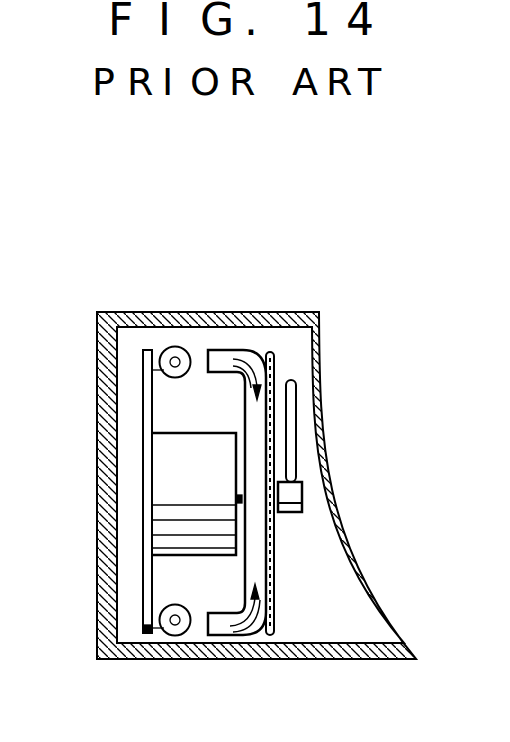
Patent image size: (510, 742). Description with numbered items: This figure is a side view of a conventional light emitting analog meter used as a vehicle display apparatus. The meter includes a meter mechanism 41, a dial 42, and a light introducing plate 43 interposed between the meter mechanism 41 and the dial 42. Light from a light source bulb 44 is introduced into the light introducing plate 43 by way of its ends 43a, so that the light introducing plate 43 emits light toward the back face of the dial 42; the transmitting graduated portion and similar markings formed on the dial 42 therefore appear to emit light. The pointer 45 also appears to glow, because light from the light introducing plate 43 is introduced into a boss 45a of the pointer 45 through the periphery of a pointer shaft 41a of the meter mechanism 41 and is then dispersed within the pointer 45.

The meter mechanism 41 is at (158, 492).
The pointer shaft 41a is at (238, 496).
The dial 42 is at (276, 585).
The light introducing plate 43 is at (258, 539).
The ends of light introducing plate 43a is at (228, 358).
The light source bulb 44 is at (172, 348).
The pointer 45 is at (293, 447).
The boss of pointer 45a is at (301, 492).